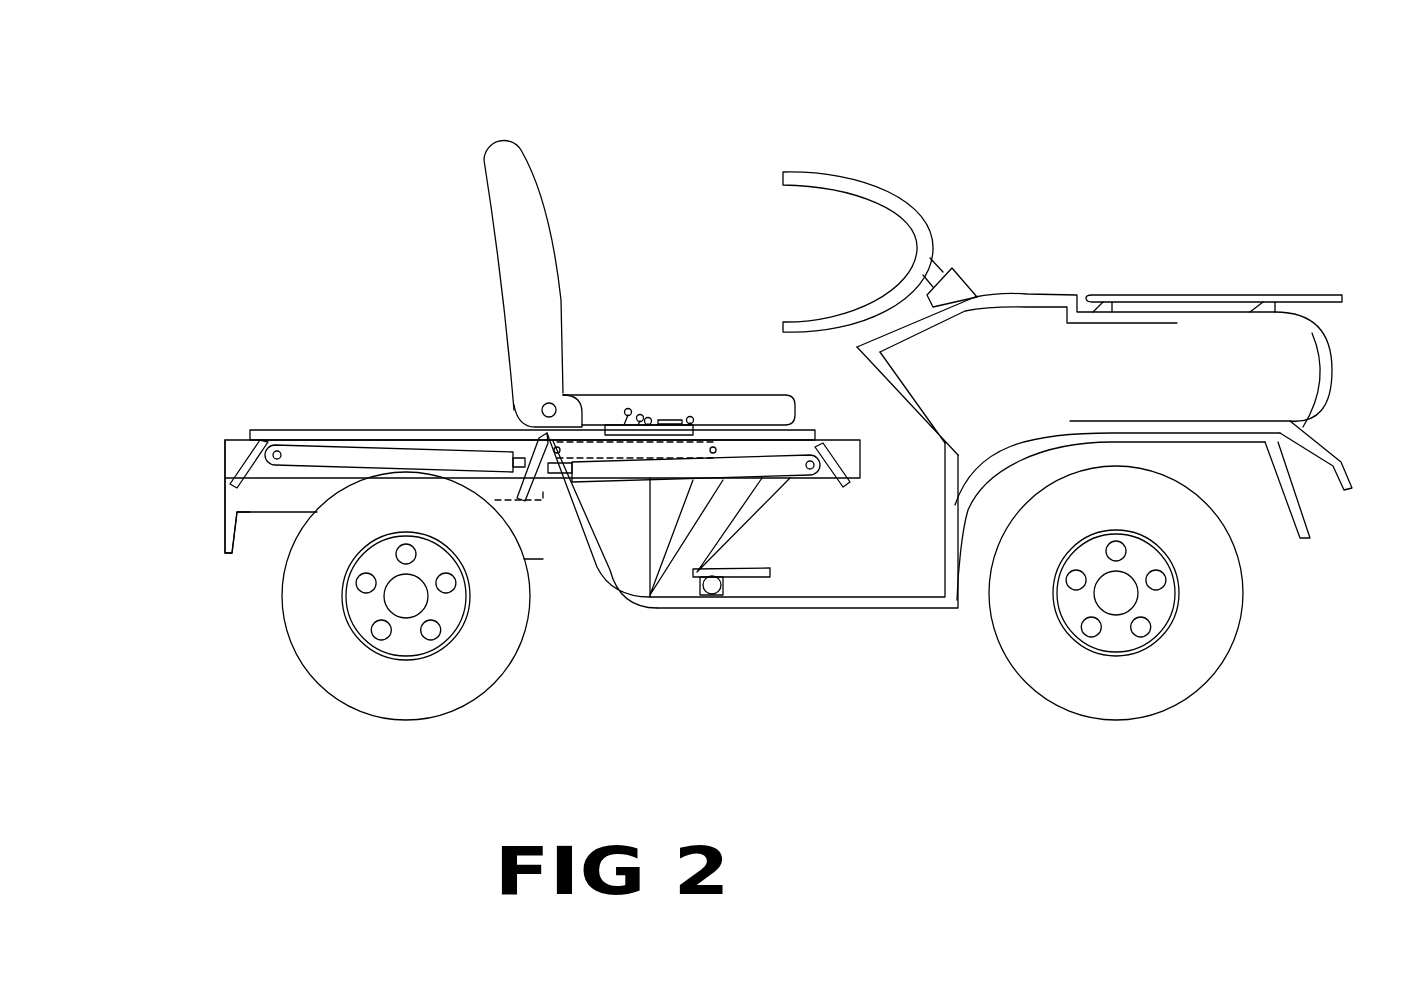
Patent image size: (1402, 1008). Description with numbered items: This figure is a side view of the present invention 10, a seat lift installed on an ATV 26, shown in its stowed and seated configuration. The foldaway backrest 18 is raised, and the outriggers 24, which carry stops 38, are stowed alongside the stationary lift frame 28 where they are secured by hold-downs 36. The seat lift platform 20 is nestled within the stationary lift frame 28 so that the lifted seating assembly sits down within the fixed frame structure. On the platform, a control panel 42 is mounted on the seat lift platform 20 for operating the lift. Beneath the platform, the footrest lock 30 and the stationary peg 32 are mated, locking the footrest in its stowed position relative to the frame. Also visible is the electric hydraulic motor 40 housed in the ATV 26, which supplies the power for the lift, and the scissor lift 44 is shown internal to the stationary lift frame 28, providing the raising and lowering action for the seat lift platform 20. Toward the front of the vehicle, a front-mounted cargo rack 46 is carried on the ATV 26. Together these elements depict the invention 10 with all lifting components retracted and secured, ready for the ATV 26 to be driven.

The present invention 10 is at (744, 426).
The foldaway backrest 18 is at (493, 140).
The seat lift platform 20 is at (380, 428).
The outriggers 24 is at (310, 463).
The ATV 26 is at (1022, 293).
The stationary lift frame 28 is at (232, 450).
The footrest lock 30 is at (723, 582).
The stationary peg 32 is at (712, 585).
The hold-downs 36 is at (533, 450).
The stops 38 is at (238, 465).
The electric hydraulic motor 40 is at (533, 503).
The control panel 42 is at (660, 420).
The scissor lift 44 is at (695, 447).
The front-mounted cargo rack 46 is at (1180, 293).